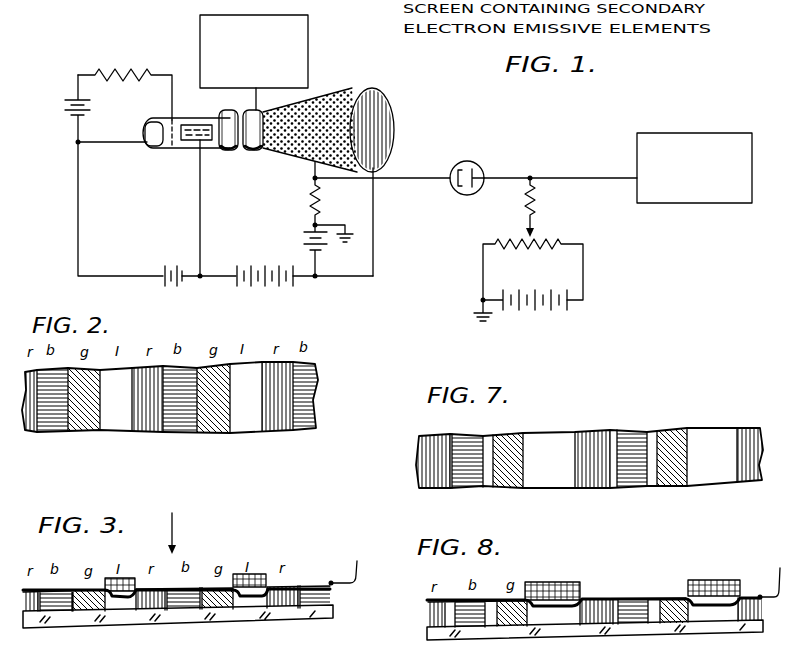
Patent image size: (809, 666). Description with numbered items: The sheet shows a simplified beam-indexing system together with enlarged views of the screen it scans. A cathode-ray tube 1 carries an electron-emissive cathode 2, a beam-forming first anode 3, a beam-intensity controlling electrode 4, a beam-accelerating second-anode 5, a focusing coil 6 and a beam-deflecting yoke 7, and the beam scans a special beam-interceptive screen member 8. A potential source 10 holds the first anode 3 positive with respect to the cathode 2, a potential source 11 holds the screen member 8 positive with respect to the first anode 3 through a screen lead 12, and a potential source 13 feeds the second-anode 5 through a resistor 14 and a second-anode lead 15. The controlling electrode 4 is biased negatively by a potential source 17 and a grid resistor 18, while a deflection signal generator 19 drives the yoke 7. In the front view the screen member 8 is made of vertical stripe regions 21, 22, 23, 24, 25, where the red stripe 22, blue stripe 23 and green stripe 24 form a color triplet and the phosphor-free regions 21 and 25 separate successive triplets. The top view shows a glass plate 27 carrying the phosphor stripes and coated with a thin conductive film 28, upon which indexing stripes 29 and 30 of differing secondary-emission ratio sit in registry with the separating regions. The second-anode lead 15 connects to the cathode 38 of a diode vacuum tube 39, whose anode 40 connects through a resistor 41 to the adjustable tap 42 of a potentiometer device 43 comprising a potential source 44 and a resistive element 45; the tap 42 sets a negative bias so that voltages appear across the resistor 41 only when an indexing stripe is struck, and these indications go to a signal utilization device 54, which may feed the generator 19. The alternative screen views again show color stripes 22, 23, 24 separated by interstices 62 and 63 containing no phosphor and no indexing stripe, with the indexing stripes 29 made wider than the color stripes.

In FIG. 1, the cathode-ray tube 1 is at (157, 149).
In FIG. 1, the electron-emissive cathode 2 is at (146, 130).
In FIG. 1, the beam-forming first anode 3 is at (197, 141).
In FIG. 1, the beam-intensity controlling electrode 4 is at (171, 125).
In FIG. 1, the beam-accelerating second-anode 5 is at (330, 100).
In FIG. 1, the focusing coil 6 is at (229, 150).
In FIG. 1, the beam-deflecting yoke 7 is at (256, 150).
In FIG. 1, the beam-interceptive screen member 8 is at (400, 30).
In FIG. 1, the potential source 10 is at (167, 268).
In FIG. 1, the potential source 11 is at (252, 266).
In FIG. 1, the screen lead 12 is at (373, 210).
In FIG. 3, the screen lead 12 is at (337, 586).
In FIG. 8, the screen lead 12 is at (769, 574).
In FIG. 1, the potential source 13 is at (307, 240).
In FIG. 1, the resistor 14 is at (310, 190).
In FIG. 1, the second-anode lead 15 is at (313, 177).
In FIG. 1, the potential source 17 is at (65, 108).
In FIG. 1, the grid resistor 18 is at (128, 68).
In FIG. 1, the deflection signal generator 19 is at (309, 48).
In FIG. 2, the stripe region 21 is at (110, 418).
In FIG. 7, the stripe region 21 is at (545, 483).
In FIG. 3, the stripe region 21 is at (119, 612).
In FIG. 2, the red phosphor stripe 22 is at (143, 420).
In FIG. 7, the red phosphor stripe 22 is at (592, 486).
In FIG. 3, the red phosphor stripe 22 is at (160, 611).
In FIG. 8, the red phosphor stripe 22 is at (601, 629).
In FIG. 2, the blue phosphor stripe 23 is at (182, 421).
In FIG. 7, the blue phosphor stripe 23 is at (630, 480).
In FIG. 3, the blue phosphor stripe 23 is at (190, 609).
In FIG. 8, the blue phosphor stripe 23 is at (640, 629).
In FIG. 2, the green phosphor stripe 24 is at (222, 423).
In FIG. 7, the green phosphor stripe 24 is at (675, 481).
In FIG. 3, the green phosphor stripe 24 is at (225, 609).
In FIG. 8, the green phosphor stripe 24 is at (680, 628).
In FIG. 2, the stripe region 25 is at (248, 416).
In FIG. 3, the stripe region 25 is at (257, 612).
In FIG. 3, the glass plate 27 is at (80, 624).
In FIG. 8, the glass plate 27 is at (735, 628).
In FIG. 3, the thin conductive film 28 is at (329, 582).
In FIG. 8, the thin conductive film 28 is at (428, 604).
In FIG. 3, the indexing stripe 29 is at (128, 579).
In FIG. 8, the indexing stripe 29 is at (548, 584).
In FIG. 3, the indexing stripe 30 is at (258, 574).
In FIG. 1, the cathode 38 is at (456, 166).
In FIG. 1, the diode vacuum tube 39 is at (453, 188).
In FIG. 1, the anode 40 is at (479, 166).
In FIG. 1, the resistor 41 is at (540, 198).
In FIG. 1, the adjustable tap 42 is at (525, 233).
In FIG. 1, the potentiometer device 43 is at (541, 338).
In FIG. 1, the potential source 44 is at (566, 309).
In FIG. 1, the resistive element 45 is at (533, 246).
In FIG. 1, the signal utilization device 54 is at (707, 133).
In FIG. 7, the interstice 62 is at (612, 432).
In FIG. 8, the interstice 62 is at (614, 602).
In FIG. 7, the interstice 63 is at (657, 432).
In FIG. 8, the interstice 63 is at (657, 602).